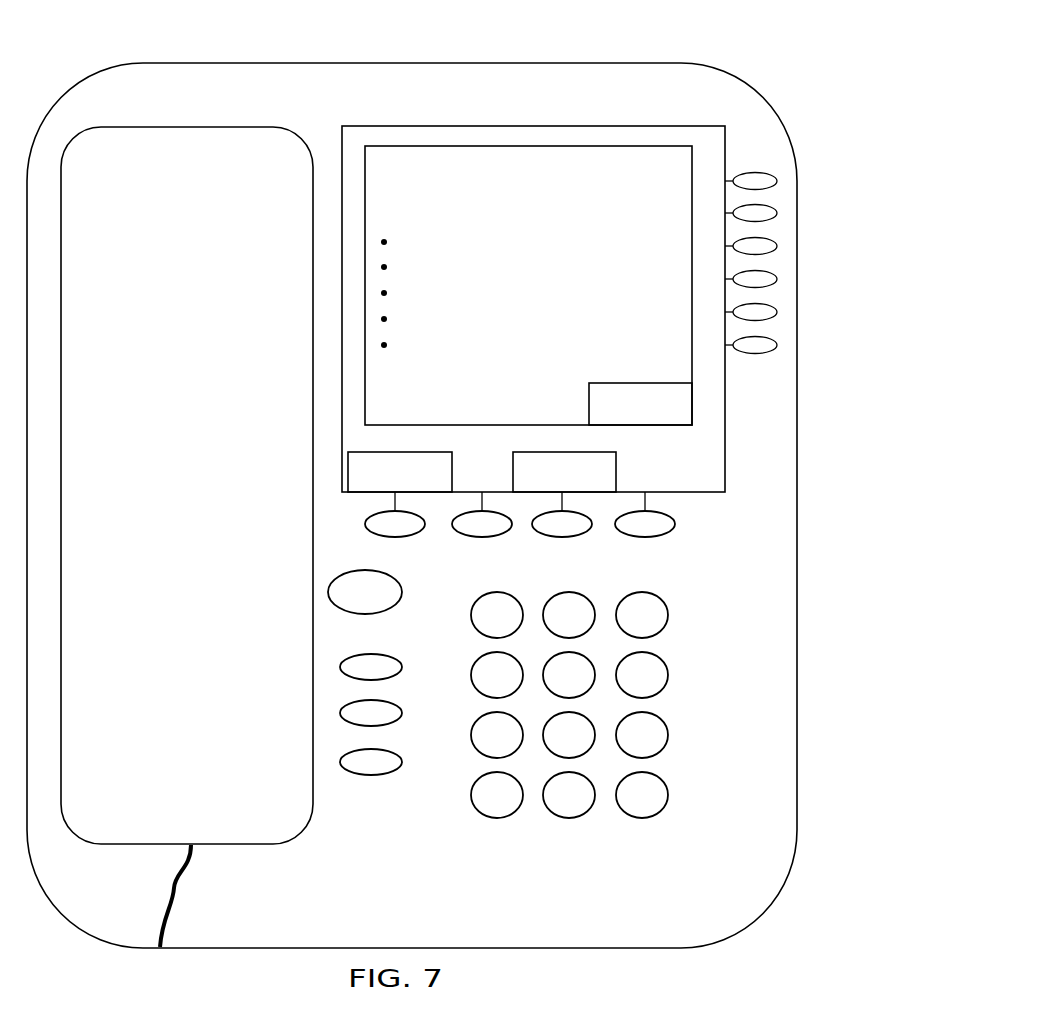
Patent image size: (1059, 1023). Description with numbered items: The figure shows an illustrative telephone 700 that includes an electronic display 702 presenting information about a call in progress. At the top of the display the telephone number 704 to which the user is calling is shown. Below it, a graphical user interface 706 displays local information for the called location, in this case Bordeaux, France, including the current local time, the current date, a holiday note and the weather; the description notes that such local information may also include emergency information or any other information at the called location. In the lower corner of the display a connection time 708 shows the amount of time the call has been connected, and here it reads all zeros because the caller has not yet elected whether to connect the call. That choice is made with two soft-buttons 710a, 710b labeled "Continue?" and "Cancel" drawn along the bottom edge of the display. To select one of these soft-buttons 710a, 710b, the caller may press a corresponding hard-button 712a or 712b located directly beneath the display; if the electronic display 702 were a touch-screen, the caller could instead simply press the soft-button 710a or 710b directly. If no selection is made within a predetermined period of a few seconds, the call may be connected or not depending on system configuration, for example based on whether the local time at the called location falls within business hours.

The telephone 700 is at (582, 63).
The electronic display 702 is at (553, 126).
The telephone number 704 is at (565, 167).
The graphical user interface 706 is at (588, 214).
The connection time 708 is at (645, 383).
The soft-button 710a is at (437, 451).
The soft-button 710b is at (607, 451).
The hard-button 712a is at (398, 538).
The hard-button 712b is at (645, 538).